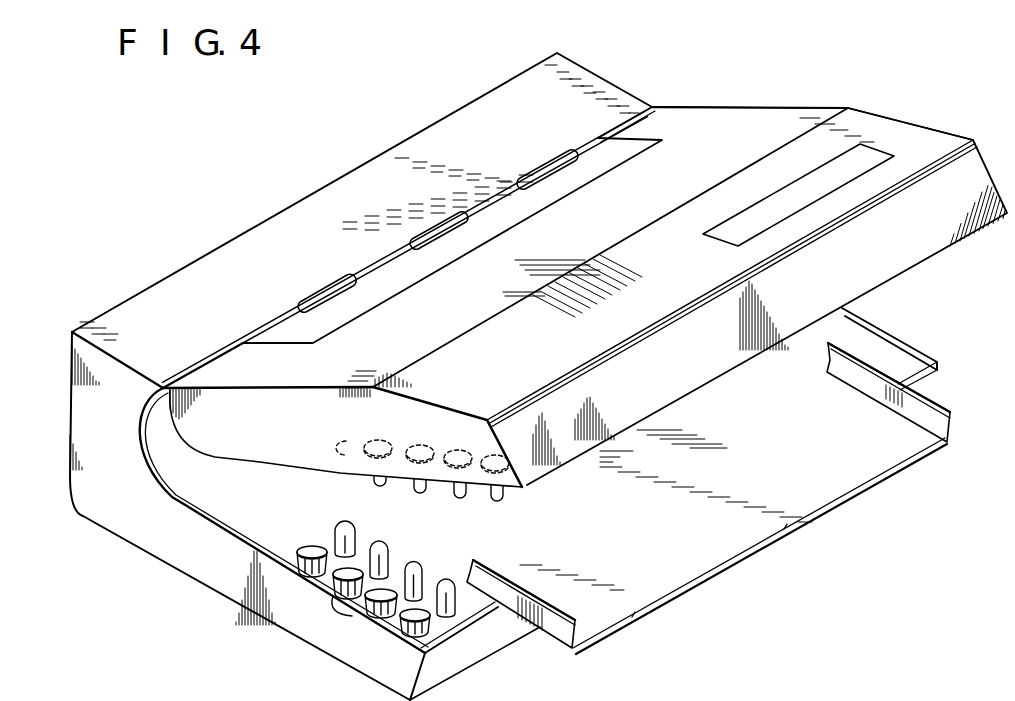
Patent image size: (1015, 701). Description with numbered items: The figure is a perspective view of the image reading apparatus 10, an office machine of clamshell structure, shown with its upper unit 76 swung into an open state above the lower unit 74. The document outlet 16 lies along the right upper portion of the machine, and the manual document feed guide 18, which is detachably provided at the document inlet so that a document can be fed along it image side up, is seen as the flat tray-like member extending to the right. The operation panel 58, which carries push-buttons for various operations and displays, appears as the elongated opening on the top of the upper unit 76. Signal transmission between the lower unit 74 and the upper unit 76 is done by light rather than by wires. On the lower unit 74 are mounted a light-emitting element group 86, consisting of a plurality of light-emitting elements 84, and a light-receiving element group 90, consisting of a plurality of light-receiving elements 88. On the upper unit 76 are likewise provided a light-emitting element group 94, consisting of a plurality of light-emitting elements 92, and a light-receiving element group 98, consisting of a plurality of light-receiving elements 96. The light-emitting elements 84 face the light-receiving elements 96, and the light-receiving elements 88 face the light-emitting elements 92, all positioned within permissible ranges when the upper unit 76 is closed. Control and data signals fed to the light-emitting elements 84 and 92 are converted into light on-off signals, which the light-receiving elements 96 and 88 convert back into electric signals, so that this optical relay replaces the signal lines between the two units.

The image reading apparatus 10 is at (100, 267).
The document outlet 16 is at (418, 276).
The manual document feed guide 18 is at (745, 538).
The operation panel 58 is at (846, 176).
The lower unit 74 is at (938, 382).
The upper unit 76 is at (728, 122).
The light-emitting elements 84 is at (447, 580).
The light-emitting element group 86 is at (333, 526).
The light-receiving elements 88 is at (332, 620).
The light-receiving element group 90 is at (303, 546).
The light-emitting elements 92 is at (492, 502).
The light-emitting element group 94 is at (372, 480).
The light-receiving elements 96 is at (493, 455).
The light-receiving element group 98 is at (346, 447).